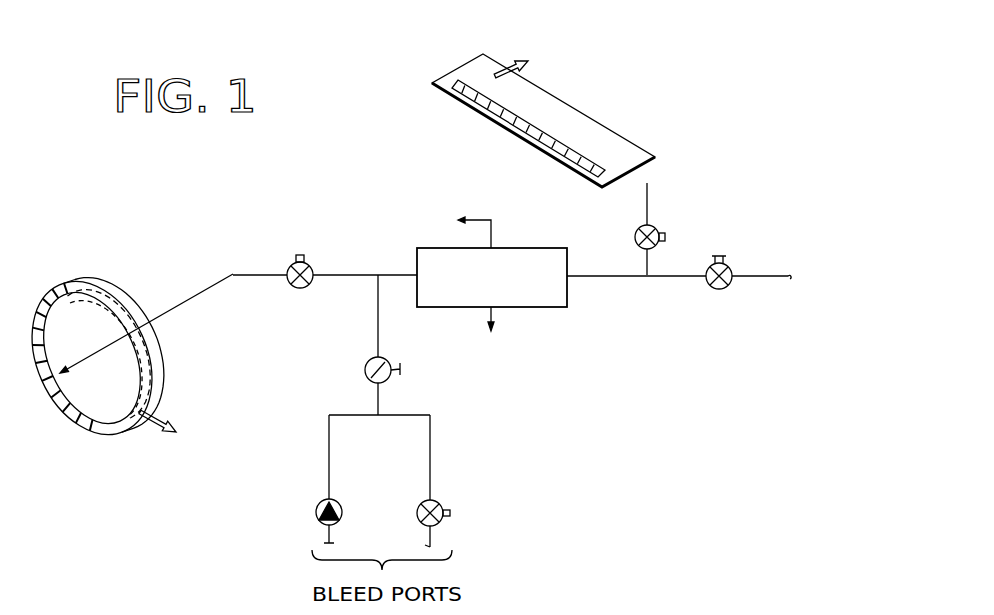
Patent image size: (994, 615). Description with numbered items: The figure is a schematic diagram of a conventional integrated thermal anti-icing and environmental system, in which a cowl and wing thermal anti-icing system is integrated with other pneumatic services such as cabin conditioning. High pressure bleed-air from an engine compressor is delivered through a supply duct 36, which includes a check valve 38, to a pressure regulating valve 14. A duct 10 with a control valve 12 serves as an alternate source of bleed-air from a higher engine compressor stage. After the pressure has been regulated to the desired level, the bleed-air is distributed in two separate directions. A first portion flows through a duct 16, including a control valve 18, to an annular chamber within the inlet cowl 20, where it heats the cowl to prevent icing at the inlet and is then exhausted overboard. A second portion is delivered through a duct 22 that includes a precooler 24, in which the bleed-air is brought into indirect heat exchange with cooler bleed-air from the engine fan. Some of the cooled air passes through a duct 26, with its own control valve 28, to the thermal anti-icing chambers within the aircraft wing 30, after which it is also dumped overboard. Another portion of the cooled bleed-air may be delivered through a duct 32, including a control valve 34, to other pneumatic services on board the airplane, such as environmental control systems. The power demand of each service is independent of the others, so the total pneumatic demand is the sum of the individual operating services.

The duct 10 is at (433, 540).
The control valve 12 is at (440, 503).
The pressure regulating valve 14 is at (387, 384).
The duct 16 is at (342, 276).
The control valve 18 is at (301, 288).
The inlet cowl 20 is at (158, 373).
The duct 22 is at (385, 272).
The precooler 24 is at (557, 307).
The duct 26 is at (647, 183).
The control valve 28 is at (635, 237).
The wing 30 is at (605, 132).
The duct 32 is at (668, 277).
The control valve 34 is at (719, 289).
The supply duct 36 is at (329, 538).
The check valve 38 is at (320, 503).